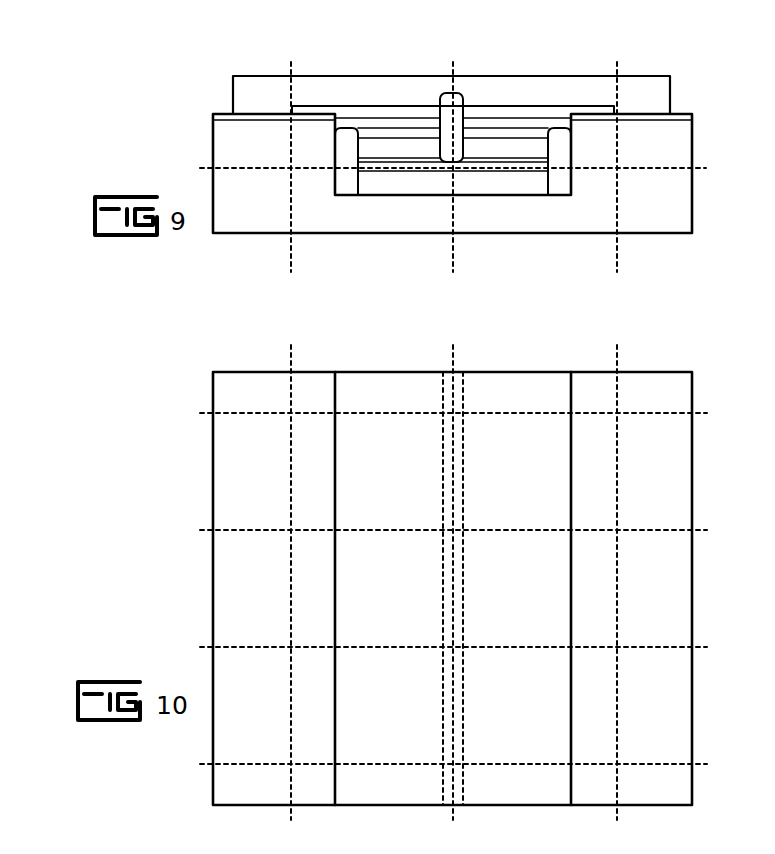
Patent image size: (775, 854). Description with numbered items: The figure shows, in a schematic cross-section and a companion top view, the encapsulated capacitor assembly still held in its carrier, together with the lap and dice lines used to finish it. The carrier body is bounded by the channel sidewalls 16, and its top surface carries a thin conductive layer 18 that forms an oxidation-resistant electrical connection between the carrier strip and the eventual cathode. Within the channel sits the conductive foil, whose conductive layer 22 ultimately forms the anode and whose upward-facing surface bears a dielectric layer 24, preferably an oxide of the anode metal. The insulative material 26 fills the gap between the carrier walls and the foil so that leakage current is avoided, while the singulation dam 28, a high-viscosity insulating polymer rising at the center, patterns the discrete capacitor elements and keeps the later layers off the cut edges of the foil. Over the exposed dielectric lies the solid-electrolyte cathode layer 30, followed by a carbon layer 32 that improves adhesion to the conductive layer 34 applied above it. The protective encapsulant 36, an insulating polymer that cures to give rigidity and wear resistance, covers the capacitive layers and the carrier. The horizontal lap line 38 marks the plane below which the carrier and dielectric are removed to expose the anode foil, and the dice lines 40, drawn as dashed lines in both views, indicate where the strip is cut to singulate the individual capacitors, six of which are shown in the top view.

In FIG. 9, the channel sidewalls 16 is at (317, 188).
In FIG. 10, the channel sidewalls 16 is at (338, 790).
In FIG. 9, the conductive layer 18 is at (272, 112).
In FIG. 10, the conductive layer 18 is at (283, 468).
In FIG. 9, the conductive layer 22 is at (430, 170).
In FIG. 9, the dielectric layer 24 is at (402, 162).
In FIG. 9, the insulative material 26 is at (345, 187).
In FIG. 9, the singulation dam 28 is at (465, 105).
In FIG. 10, the singulation dam 28 is at (443, 392).
In FIG. 9, the cathode layer 30 is at (400, 133).
In FIG. 9, the carbon layer 32 is at (368, 123).
In FIG. 9, the conductive layer 34 is at (390, 112).
In FIG. 9, the encapsulant 36 is at (593, 93).
In FIG. 10, the encapsulant 36 is at (496, 720).
In FIG. 9, the lap line 38 is at (705, 166).
In FIG. 9, the dice lines 40 is at (288, 254).
In FIG. 10, the dice lines 40 is at (293, 363).